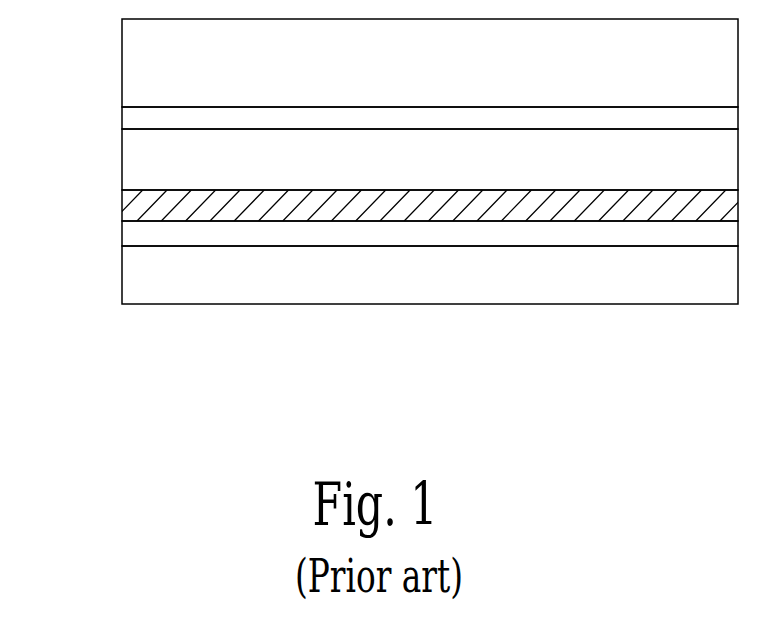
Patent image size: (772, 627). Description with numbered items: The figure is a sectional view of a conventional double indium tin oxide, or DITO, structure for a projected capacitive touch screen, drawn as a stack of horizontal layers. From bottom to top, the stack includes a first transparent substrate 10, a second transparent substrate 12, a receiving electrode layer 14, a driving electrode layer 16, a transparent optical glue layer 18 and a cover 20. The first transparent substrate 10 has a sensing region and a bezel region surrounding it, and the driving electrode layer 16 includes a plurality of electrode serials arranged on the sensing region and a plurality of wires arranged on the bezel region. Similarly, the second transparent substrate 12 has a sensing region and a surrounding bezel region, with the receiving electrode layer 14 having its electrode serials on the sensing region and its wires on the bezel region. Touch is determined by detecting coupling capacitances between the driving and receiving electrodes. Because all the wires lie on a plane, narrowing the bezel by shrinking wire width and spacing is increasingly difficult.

The first transparent substrate 10 is at (138, 271).
The driving electrode layer 16 is at (137, 238).
The transparent optical glue layer 18 is at (142, 213).
The second transparent substrate 12 is at (140, 171).
The receiving electrode layer 14 is at (138, 122).
The cover 20 is at (140, 68).